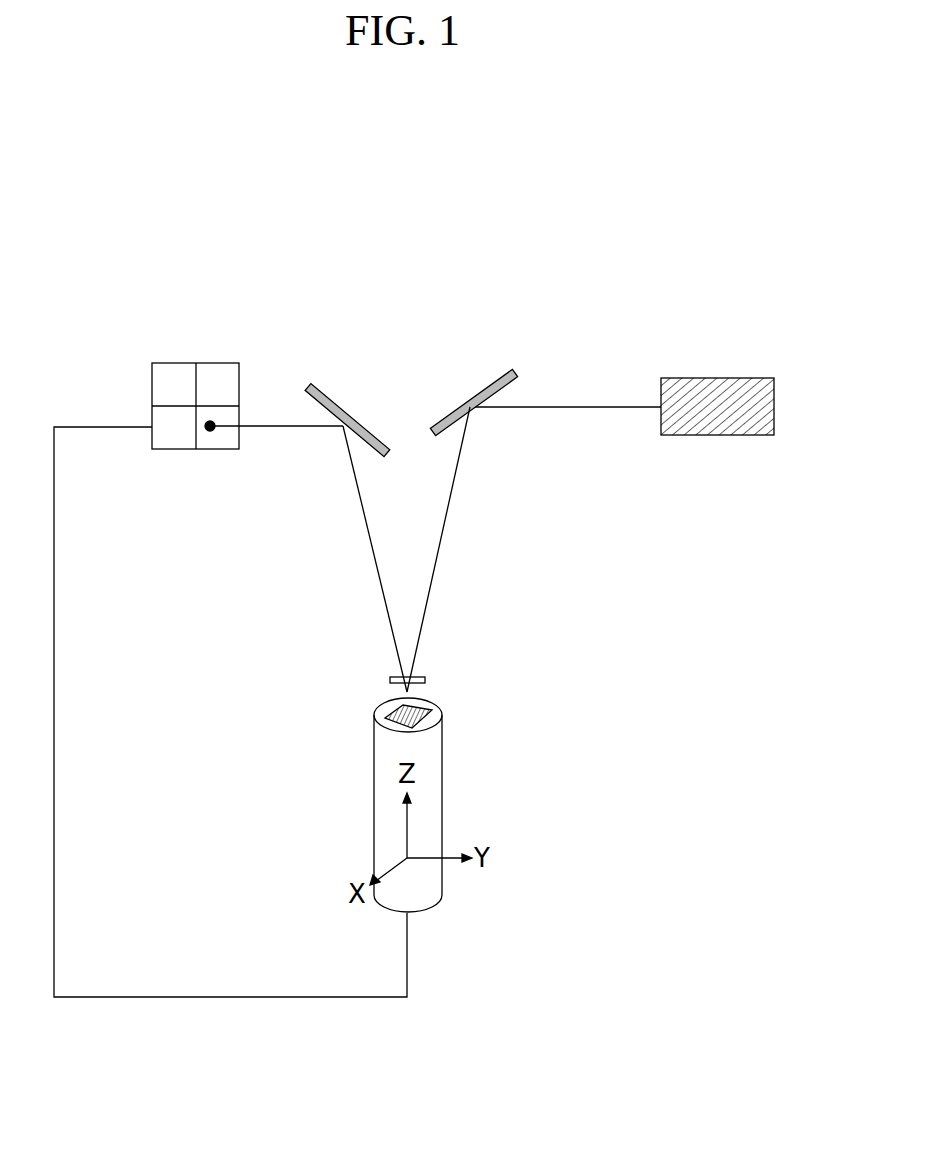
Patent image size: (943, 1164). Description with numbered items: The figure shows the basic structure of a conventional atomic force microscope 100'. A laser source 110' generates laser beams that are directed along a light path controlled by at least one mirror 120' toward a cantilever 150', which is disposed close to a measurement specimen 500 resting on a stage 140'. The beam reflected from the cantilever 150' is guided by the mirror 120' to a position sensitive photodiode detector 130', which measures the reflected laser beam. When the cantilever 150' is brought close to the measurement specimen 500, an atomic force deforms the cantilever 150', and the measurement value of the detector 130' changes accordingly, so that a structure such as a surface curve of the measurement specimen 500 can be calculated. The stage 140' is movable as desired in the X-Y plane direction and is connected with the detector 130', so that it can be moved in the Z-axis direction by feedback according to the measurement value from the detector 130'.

The laser processing system 100' is at (526, 250).
The laser source 110' is at (622, 377).
The mirror 120' is at (411, 393).
The position sensitive photodiode detector (PSPD) 130' is at (195, 375).
The stage 140' is at (443, 805).
The cantilever 150' is at (451, 688).
The measurement specimen 500 is at (386, 712).